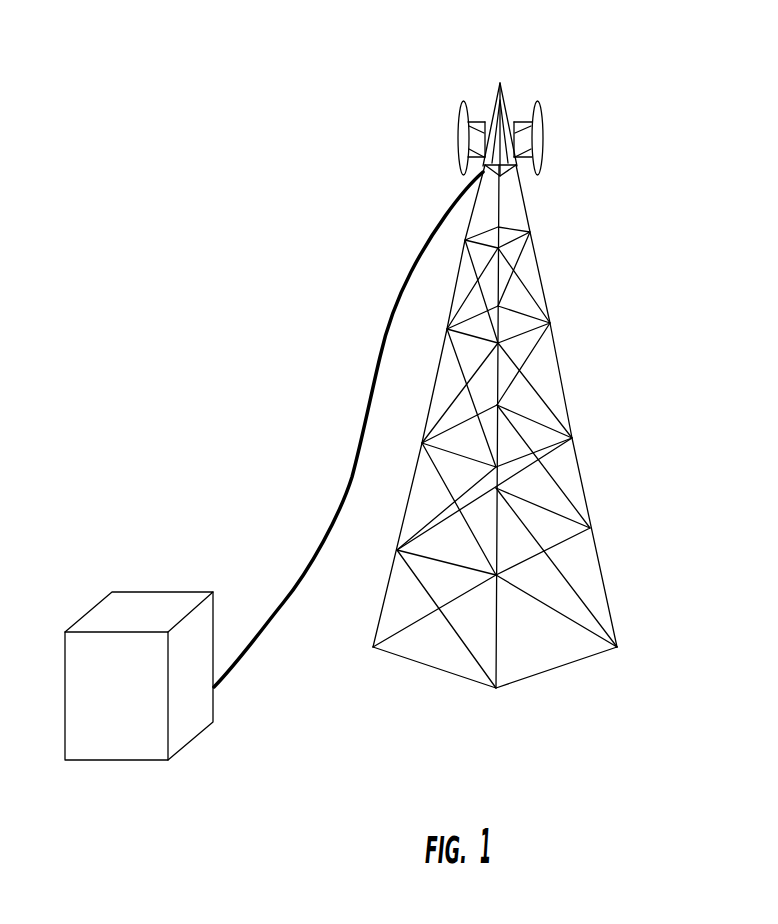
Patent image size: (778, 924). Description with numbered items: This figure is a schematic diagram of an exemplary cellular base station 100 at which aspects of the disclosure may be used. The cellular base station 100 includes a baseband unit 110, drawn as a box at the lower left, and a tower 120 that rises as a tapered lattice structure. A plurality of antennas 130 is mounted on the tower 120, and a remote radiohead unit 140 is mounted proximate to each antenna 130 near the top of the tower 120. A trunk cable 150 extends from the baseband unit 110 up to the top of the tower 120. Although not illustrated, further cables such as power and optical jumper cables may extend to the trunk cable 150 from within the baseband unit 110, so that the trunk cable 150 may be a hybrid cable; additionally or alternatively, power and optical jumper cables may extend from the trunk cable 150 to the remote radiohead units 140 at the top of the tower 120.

The cellular base station 100 is at (208, 254).
The baseband unit 110 is at (130, 622).
The tower 120 is at (580, 466).
The antenna 130 is at (541, 175).
The remote radiohead unit 140 is at (478, 121).
The trunk cable 150 is at (357, 457).